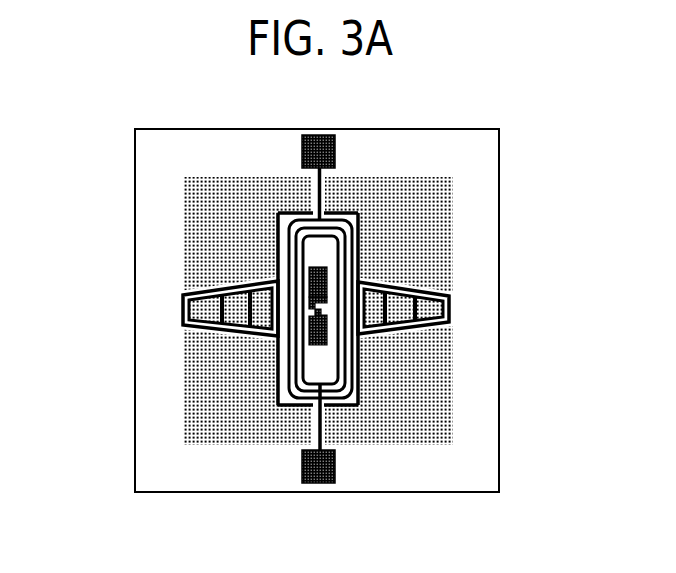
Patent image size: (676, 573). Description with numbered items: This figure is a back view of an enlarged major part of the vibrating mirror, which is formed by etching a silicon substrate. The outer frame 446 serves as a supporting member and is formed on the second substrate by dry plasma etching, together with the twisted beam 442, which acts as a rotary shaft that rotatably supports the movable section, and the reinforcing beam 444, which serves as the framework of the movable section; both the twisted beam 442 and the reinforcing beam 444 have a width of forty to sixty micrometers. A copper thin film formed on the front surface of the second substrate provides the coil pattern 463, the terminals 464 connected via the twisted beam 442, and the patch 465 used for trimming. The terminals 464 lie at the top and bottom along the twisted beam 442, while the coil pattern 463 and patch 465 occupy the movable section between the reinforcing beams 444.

The twisted beam 442 is at (315, 197).
The reinforcing beam 444 is at (186, 313).
The frame 446 is at (474, 142).
The coil pattern 463 is at (135, 238).
The terminals 464 is at (319, 138).
The patch 465 is at (318, 277).